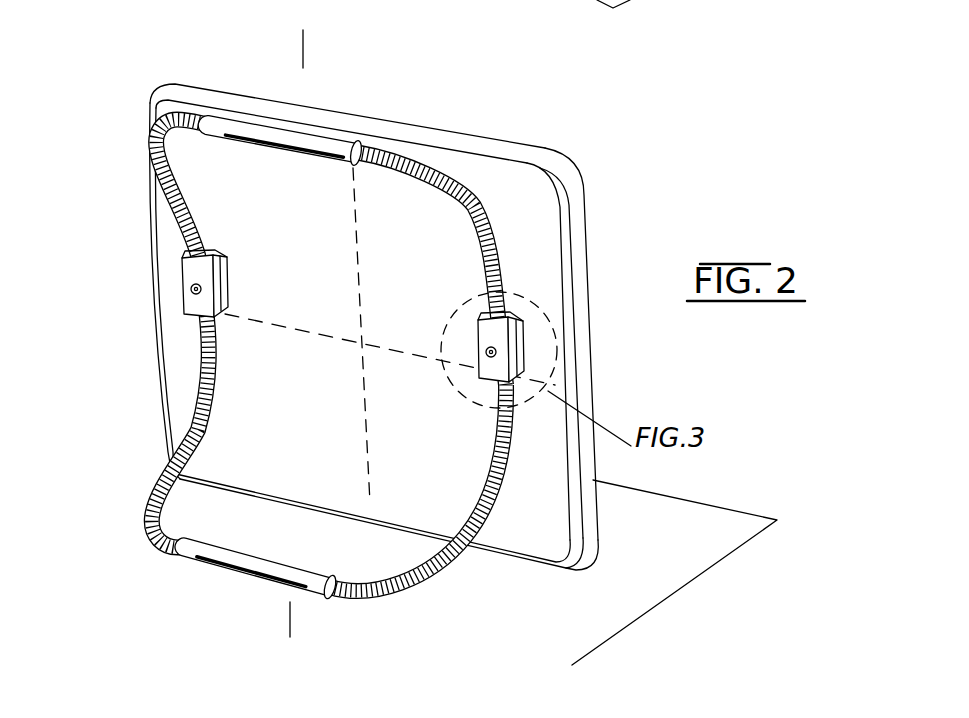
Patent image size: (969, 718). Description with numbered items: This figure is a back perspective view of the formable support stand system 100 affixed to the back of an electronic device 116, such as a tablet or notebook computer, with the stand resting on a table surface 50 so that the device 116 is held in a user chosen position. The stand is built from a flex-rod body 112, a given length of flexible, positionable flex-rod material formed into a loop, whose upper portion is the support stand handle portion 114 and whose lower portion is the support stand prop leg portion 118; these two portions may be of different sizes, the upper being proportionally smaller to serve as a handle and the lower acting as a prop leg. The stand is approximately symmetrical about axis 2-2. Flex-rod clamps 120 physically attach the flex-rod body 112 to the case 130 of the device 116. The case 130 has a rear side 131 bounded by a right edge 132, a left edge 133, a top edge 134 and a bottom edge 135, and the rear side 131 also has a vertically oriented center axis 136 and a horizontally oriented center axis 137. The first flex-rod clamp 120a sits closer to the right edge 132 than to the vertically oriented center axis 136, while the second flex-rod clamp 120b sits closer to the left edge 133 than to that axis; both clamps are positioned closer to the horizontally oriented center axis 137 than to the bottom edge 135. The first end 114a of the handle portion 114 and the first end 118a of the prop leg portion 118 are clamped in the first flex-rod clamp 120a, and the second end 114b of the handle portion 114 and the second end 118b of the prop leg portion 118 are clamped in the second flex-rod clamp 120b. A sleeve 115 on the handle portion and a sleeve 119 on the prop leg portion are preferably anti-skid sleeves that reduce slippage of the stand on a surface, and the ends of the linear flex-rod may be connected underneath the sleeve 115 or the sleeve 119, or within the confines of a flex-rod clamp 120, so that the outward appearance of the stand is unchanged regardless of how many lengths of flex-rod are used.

The axis 2- 2 is at (296, 340).
The table surface 50 is at (713, 527).
The formable support stand system 100 is at (370, 340).
The flex-rod body 112 is at (370, 340).
The support stand handle portion 114 is at (354, 212).
The first end of the handle portion 114a is at (198, 233).
The second end of the handle portion 114b is at (504, 279).
The sleeve 115 is at (254, 118).
The electronic device 116 is at (373, 345).
The support stand prop leg portion 118 is at (314, 452).
The first end of the prop leg portion 118a is at (215, 330).
The second end of the prop leg portion 118b is at (513, 393).
The sleeve 119 is at (200, 583).
The flex-rod clamp 120 is at (359, 329).
The first flex-rod clamp 120a is at (222, 283).
The second flex-rod clamp 120b is at (477, 336).
The case 130 is at (366, 345).
The rear side 131 is at (366, 345).
The right edge 132 is at (147, 137).
The left edge 133 is at (567, 218).
The top edge 134 is at (407, 146).
The bottom edge 135 is at (513, 556).
The vertically oriented center axis 136 is at (353, 210).
The horizontally oriented center axis 137 is at (279, 321).